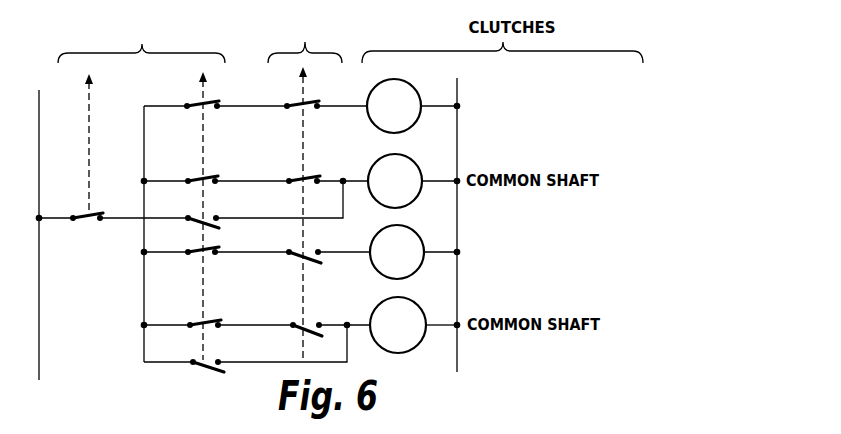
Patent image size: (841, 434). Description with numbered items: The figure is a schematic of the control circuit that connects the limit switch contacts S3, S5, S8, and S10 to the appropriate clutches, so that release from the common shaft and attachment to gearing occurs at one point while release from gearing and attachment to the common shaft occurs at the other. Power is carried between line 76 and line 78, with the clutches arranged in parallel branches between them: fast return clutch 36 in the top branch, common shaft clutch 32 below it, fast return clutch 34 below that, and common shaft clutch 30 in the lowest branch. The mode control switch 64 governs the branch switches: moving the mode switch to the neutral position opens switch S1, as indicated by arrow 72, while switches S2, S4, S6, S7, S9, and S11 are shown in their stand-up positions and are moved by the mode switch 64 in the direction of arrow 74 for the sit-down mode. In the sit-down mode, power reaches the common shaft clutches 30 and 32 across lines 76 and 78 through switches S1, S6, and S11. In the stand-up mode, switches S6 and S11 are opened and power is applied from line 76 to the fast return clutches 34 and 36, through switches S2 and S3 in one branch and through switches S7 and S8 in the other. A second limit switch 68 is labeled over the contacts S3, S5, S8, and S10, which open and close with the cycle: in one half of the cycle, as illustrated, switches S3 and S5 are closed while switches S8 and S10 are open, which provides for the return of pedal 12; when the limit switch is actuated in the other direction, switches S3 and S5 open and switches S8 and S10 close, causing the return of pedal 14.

The pedal 12 is at (582, 106).
The pedal 14 is at (579, 252).
The common shaft clutch 30 is at (385, 334).
The common shaft clutch 32 is at (382, 190).
The fast return clutch 34 is at (384, 261).
The fast return clutch 36 is at (381, 115).
The mode control switch 64 is at (141, 43).
The limit switch 68 is at (312, 182).
The arrow 72 is at (90, 103).
The arrow 74 is at (204, 147).
The line 76 is at (40, 364).
The line 78 is at (458, 362).
The switch S1 is at (93, 208).
The switch S2 is at (206, 97).
The limit switch contact S3 is at (307, 97).
The switch S4 is at (207, 171).
The limit switch contact S5 is at (308, 171).
The switch S6 is at (207, 211).
The switch S7 is at (208, 242).
The limit switch contact S8 is at (308, 246).
The switch S9 is at (209, 315).
The limit switch contact S10 is at (316, 318).
The switch S11 is at (216, 356).